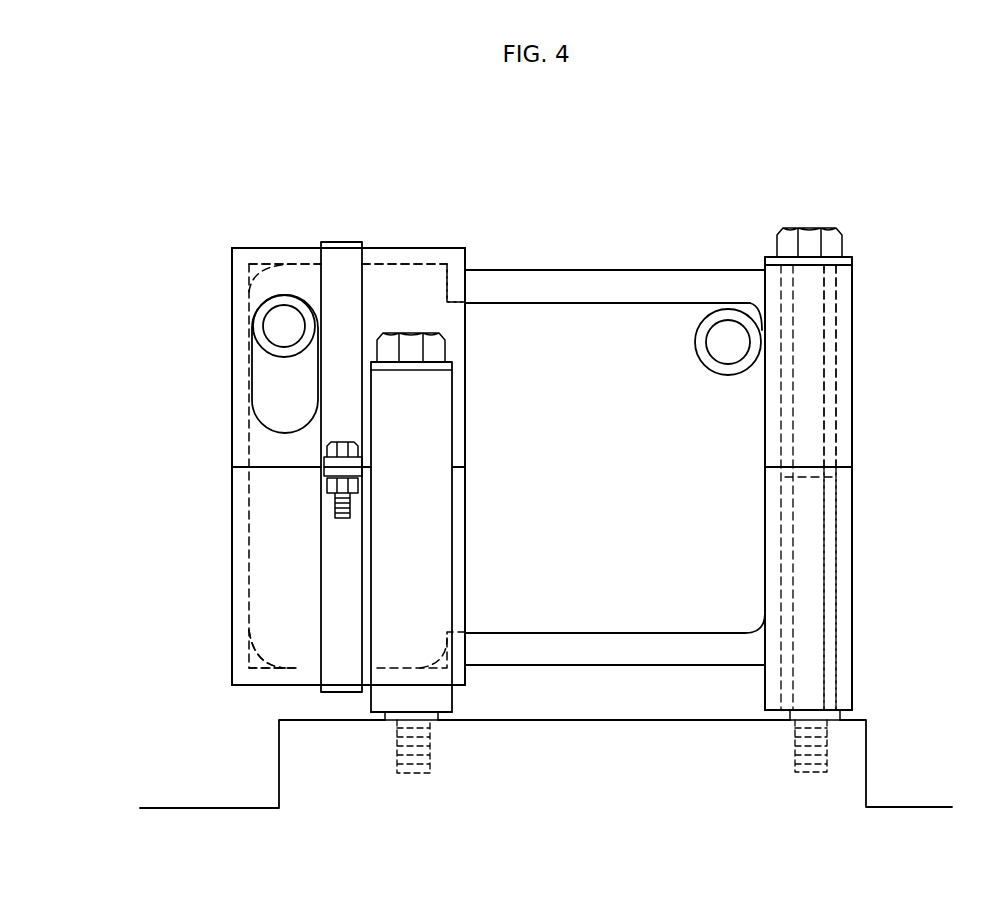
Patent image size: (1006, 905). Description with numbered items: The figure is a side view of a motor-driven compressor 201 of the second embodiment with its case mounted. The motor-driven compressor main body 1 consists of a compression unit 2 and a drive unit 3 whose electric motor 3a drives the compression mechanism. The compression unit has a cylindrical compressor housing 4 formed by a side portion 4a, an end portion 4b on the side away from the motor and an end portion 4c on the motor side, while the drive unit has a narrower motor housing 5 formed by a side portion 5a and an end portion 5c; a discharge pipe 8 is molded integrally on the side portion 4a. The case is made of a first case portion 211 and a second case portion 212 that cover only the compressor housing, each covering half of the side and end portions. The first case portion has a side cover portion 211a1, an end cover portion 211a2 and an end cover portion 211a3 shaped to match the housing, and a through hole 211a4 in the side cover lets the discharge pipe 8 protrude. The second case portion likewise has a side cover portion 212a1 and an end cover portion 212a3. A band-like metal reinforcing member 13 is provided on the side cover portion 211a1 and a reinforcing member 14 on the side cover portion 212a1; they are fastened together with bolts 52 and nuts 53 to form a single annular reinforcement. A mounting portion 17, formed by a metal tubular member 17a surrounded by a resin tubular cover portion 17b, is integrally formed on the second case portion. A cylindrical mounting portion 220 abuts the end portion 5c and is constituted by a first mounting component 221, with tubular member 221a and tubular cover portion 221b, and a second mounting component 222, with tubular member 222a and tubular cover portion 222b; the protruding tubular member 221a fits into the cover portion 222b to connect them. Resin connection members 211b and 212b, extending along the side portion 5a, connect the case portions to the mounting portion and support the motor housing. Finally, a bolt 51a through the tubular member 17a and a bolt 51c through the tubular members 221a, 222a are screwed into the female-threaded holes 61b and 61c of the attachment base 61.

The motor-driven compressor 201 is at (130, 168).
The first case portion 211 is at (227, 244).
The second case portion 212 is at (226, 687).
The side cover portion 211a1 is at (264, 247).
The end cover portion 211a2 is at (232, 300).
The end cover portion 211a3 is at (468, 252).
The through hole 211a4 is at (266, 392).
The connection member 211b is at (572, 282).
The side cover portion 212a1 is at (258, 686).
The end cover portion 212a3 is at (466, 678).
The connection member 212b is at (686, 655).
The motor-driven compressor main body 1 is at (303, 256).
The compression unit 2 is at (393, 256).
The drive unit 3 is at (628, 333).
The electric motor 3a is at (625, 590).
The compressor housing 4 is at (243, 584).
The side portion 4a is at (297, 670).
The end portion 4b is at (246, 642).
The end portion 4c is at (463, 292).
The motor housing 5 is at (670, 340).
The side portion 5a is at (714, 312).
The end portion 5c is at (765, 357).
The discharge pipe 8 is at (264, 373).
The reinforcing member 13 is at (357, 242).
The reinforcing member 14 is at (337, 694).
The mounting portion 17 is at (370, 707).
The tubular member 17a is at (452, 712).
The tubular cover portion 17b is at (464, 702).
The bolt 51a is at (453, 335).
The bolt 51c is at (810, 228).
The bolt 52 is at (326, 448).
The nut 53 is at (330, 492).
The attachment base 61 is at (866, 770).
The female-threaded hole 61b is at (418, 770).
The female-threaded hole 61c is at (820, 745).
The mounting portion 220 is at (856, 253).
The first mounting component 221 is at (852, 272).
The tubular member 221a is at (830, 355).
The tubular cover portion 221b is at (842, 420).
The second mounting component 222 is at (852, 688).
The tubular member 222a is at (830, 540).
The tubular cover portion 222b is at (842, 587).